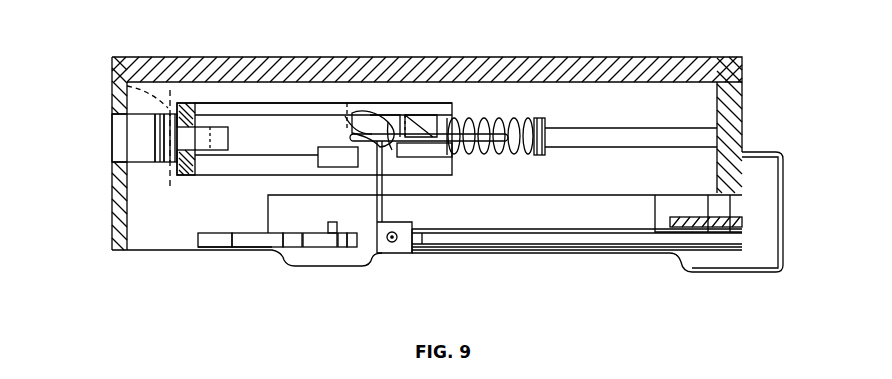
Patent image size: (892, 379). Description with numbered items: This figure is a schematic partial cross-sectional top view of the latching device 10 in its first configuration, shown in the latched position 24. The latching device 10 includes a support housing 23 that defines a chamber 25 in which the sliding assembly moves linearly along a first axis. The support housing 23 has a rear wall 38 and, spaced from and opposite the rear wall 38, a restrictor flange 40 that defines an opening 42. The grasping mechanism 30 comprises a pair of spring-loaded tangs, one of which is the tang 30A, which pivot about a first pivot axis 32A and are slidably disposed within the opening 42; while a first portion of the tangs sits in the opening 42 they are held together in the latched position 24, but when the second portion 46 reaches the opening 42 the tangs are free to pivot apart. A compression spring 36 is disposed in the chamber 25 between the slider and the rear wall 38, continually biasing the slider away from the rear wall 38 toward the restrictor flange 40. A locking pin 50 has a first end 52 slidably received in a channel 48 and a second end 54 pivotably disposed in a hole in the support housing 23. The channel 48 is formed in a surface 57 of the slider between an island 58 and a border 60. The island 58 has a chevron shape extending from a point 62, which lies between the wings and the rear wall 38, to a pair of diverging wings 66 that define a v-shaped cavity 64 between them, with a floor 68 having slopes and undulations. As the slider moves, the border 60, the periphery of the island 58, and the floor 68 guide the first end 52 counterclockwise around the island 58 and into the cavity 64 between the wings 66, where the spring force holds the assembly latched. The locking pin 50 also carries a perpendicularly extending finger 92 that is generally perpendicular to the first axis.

The latching device 10 is at (136, 38).
The support housing 23 is at (266, 66).
The latched position 24 is at (104, 200).
The chamber 25 is at (584, 106).
The grasping mechanism 30 is at (144, 216).
The tang 30A is at (118, 145).
The first pivot axis 32A is at (118, 74).
The compression spring 36 is at (482, 118).
The rear wall 38 is at (732, 100).
The restrictor flange 40 is at (118, 246).
The opening 42 is at (110, 117).
The second portion 46 is at (141, 153).
The channel 48 is at (392, 120).
The locking pin 50 is at (458, 112).
The first end 52 is at (348, 118).
The second end 54 is at (514, 120).
The surface 57 is at (254, 134).
The island 58 is at (370, 130).
The border 60 is at (338, 115).
The point 62 is at (420, 106).
The cavity 64 is at (343, 144).
The wings 66 is at (352, 163).
The floor 68 is at (390, 158).
The finger 92 is at (393, 186).